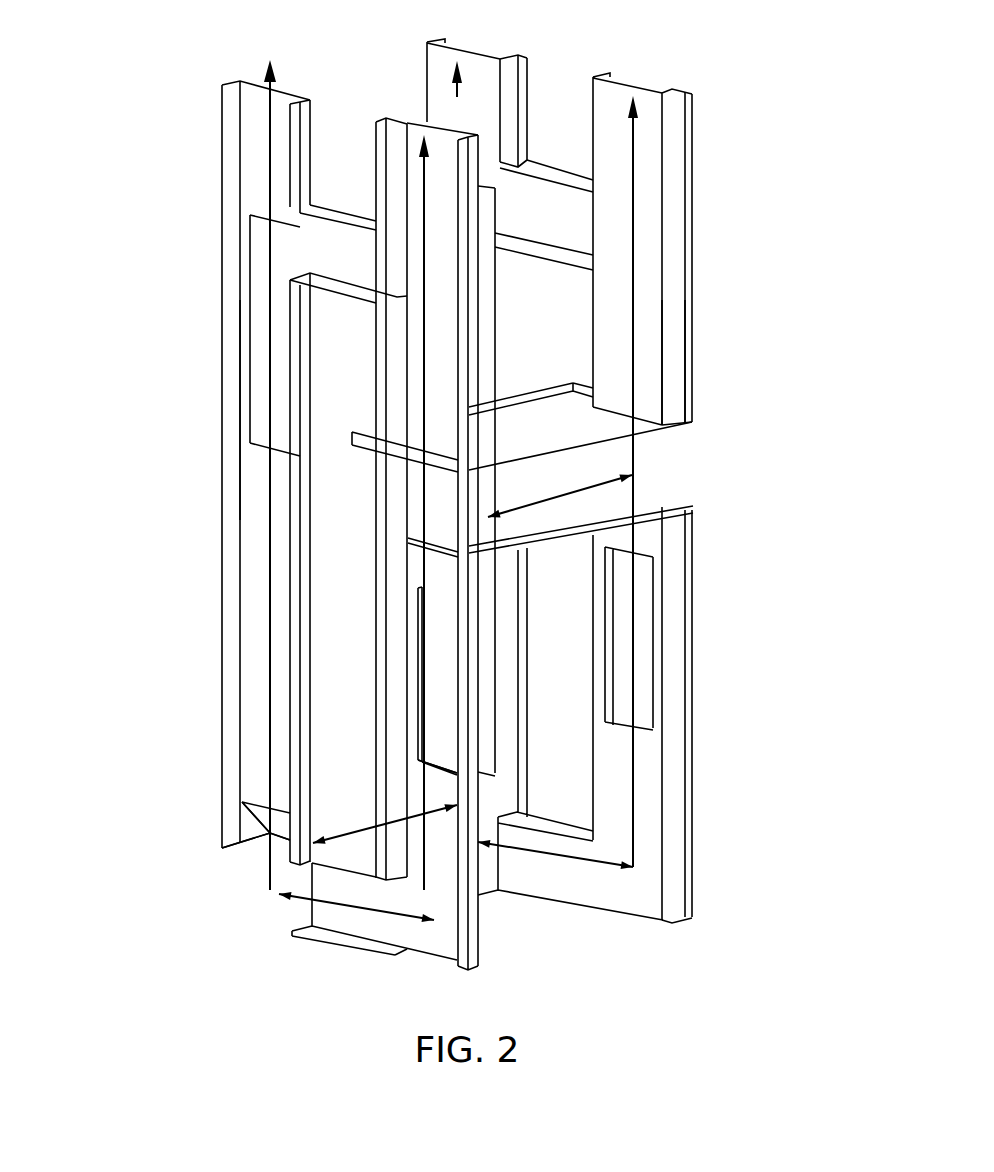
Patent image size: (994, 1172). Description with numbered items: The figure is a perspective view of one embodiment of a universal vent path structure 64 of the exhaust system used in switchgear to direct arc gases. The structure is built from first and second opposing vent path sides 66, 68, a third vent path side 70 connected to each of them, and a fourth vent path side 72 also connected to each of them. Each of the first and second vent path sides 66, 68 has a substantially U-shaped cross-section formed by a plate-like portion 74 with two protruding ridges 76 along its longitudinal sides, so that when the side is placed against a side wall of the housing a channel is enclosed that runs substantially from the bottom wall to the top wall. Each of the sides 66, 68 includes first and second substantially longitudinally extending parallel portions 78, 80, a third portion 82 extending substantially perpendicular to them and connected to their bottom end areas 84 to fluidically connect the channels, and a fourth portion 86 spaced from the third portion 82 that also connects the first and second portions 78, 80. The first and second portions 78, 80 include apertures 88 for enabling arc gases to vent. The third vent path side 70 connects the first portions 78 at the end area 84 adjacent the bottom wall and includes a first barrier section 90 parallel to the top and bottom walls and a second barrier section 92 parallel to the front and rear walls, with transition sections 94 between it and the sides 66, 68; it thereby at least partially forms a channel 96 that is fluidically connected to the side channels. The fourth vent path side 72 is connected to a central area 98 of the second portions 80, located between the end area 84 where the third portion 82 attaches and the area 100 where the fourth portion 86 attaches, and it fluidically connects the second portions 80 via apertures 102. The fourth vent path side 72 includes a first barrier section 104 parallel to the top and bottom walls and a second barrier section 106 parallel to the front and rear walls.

The universal vent path structure 64 is at (200, 437).
The first vent path side 66 is at (220, 590).
The second vent path side 68 is at (693, 158).
The third vent path side 70 is at (333, 830).
The fourth vent path side 72 is at (576, 438).
The plate-like portion 74 is at (258, 212).
The protruding ridge 76 is at (233, 555).
The first portion 78 is at (443, 86).
The second portion 80 is at (663, 218).
The third portion 82 is at (362, 923).
The bottom end area 84 is at (270, 843).
The fourth portion 86 is at (560, 212).
The aperture 88 is at (262, 286).
The first barrier section 90 is at (240, 800).
The second barrier section 92 is at (365, 862).
The transition section 94 is at (268, 813).
The channel 96 is at (270, 872).
The central area 98 is at (670, 380).
The area 100 is at (450, 248).
The aperture 102 is at (413, 510).
The first barrier section 104 is at (556, 437).
The second barrier section 106 is at (653, 488).